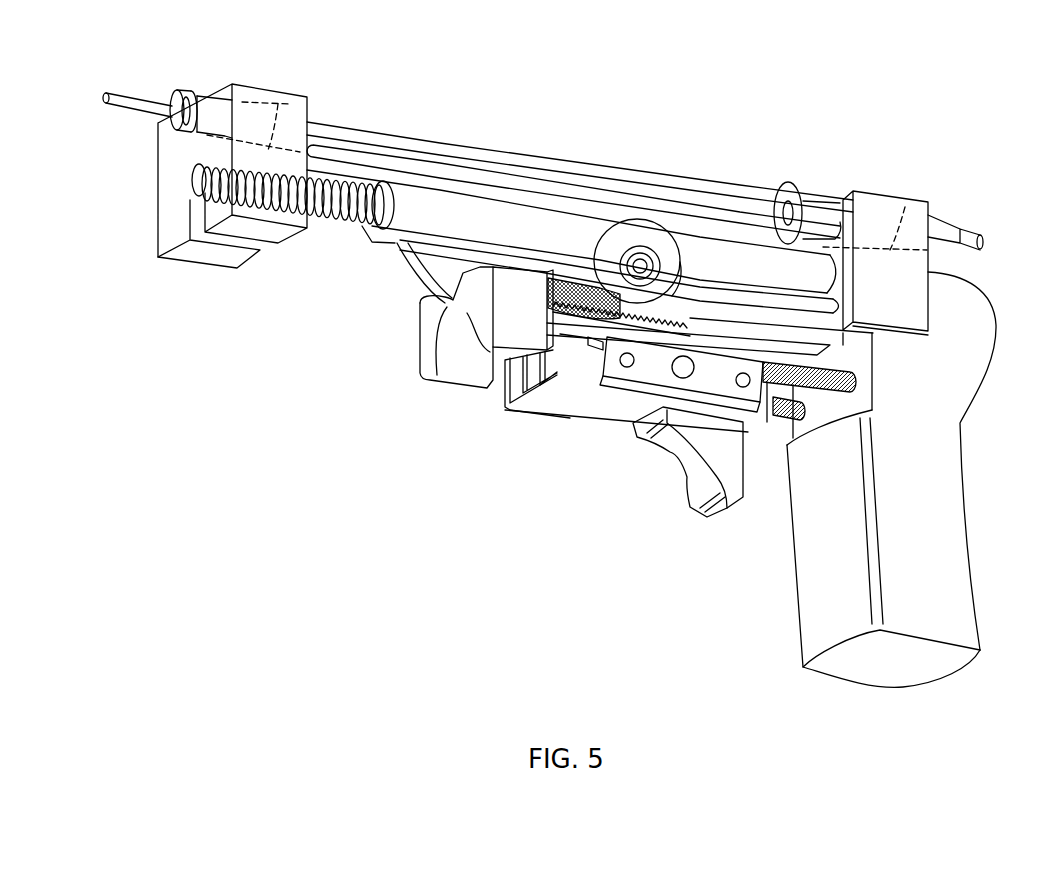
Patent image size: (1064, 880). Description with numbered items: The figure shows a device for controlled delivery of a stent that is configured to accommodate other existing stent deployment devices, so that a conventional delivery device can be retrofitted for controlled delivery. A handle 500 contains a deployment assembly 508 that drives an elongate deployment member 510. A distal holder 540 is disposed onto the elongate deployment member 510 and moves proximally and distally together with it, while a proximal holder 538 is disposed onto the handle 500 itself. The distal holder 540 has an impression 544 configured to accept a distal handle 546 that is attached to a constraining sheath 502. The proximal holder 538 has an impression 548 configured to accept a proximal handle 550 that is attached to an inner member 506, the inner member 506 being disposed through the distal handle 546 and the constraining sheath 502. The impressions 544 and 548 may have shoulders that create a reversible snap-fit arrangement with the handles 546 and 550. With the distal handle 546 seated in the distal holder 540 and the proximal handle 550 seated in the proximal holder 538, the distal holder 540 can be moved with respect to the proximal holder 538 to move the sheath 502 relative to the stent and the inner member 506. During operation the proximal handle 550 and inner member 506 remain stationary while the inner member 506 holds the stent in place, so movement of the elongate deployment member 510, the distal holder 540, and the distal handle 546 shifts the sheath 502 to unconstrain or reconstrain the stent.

The handle 500 is at (990, 297).
The constraining sheath 502 is at (135, 95).
The inner member 506 is at (707, 197).
The deployment assembly 508 is at (484, 404).
The elongate deployment member 510 is at (190, 200).
The proximal holder 538 is at (933, 218).
The distal holder 540 is at (157, 304).
The impression 544 is at (213, 100).
The distal handle 546 is at (200, 96).
The impression 548 is at (843, 205).
The proximal handle 550 is at (817, 198).